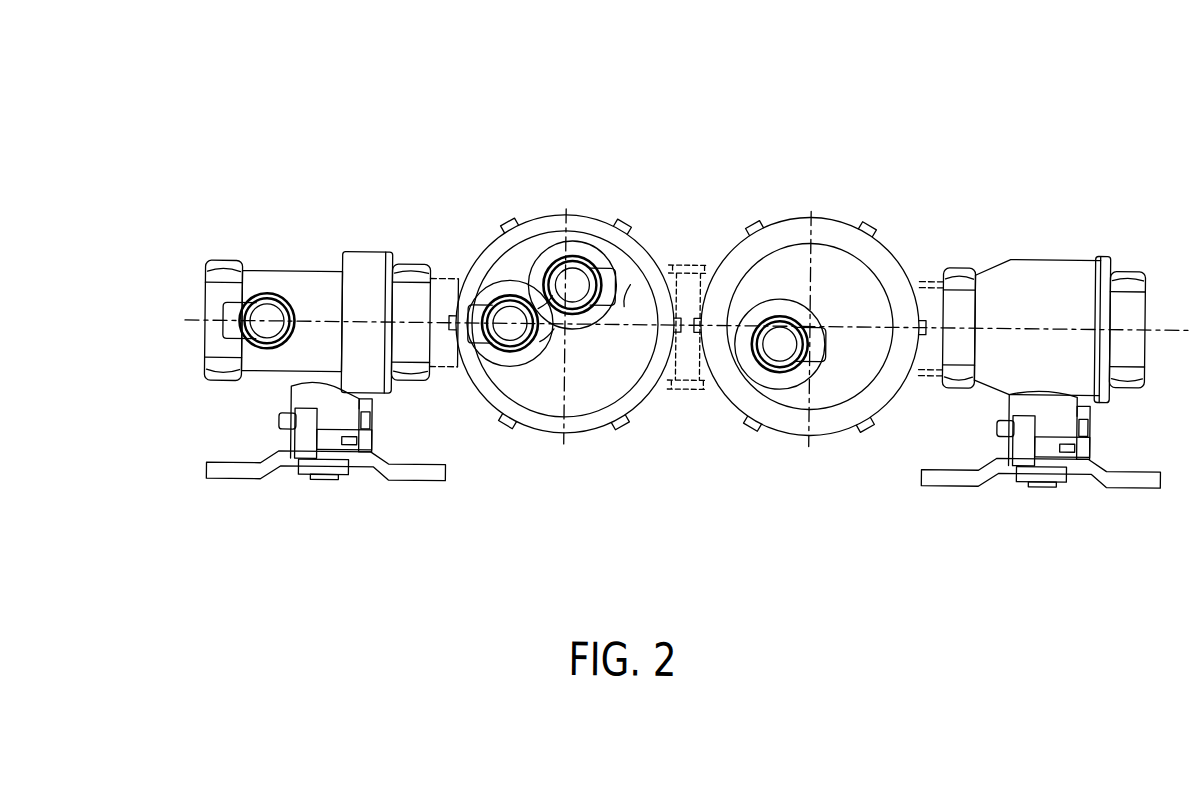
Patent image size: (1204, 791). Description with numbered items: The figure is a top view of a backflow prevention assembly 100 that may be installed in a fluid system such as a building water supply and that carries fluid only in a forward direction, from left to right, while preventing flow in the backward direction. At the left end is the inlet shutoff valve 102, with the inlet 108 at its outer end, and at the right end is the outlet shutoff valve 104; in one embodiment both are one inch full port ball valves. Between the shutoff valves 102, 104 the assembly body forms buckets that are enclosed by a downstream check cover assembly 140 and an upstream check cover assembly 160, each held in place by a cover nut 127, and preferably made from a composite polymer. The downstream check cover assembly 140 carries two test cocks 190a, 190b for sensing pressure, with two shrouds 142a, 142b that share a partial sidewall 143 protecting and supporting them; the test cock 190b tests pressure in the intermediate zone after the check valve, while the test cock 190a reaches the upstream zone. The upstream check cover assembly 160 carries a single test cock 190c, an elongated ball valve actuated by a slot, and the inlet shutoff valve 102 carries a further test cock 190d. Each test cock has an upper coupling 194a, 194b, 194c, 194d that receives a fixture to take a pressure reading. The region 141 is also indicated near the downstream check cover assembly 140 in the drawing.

The backflow prevention assembly 100 is at (840, 98).
The inlet shutoff valve 102 is at (292, 364).
The outlet shutoff valve 104 is at (1083, 382).
The inlet 108 is at (207, 300).
The cover nut 127 is at (528, 229).
The downstream check cover assembly 140 is at (585, 383).
The housing wall 141 is at (630, 295).
The shroud 142a is at (500, 355).
The shroud 142b is at (600, 312).
The partial sidewall 143 is at (515, 362).
The upstream check cover assembly 160 is at (826, 263).
The test cock 190a is at (507, 293).
The test cock 190b is at (578, 259).
The test cock 190c is at (782, 360).
The test cock 190d is at (282, 294).
The upper coupling 194a is at (505, 349).
The upper coupling 194b is at (593, 266).
The upper coupling 194c is at (774, 362).
The upper coupling 194d is at (264, 300).